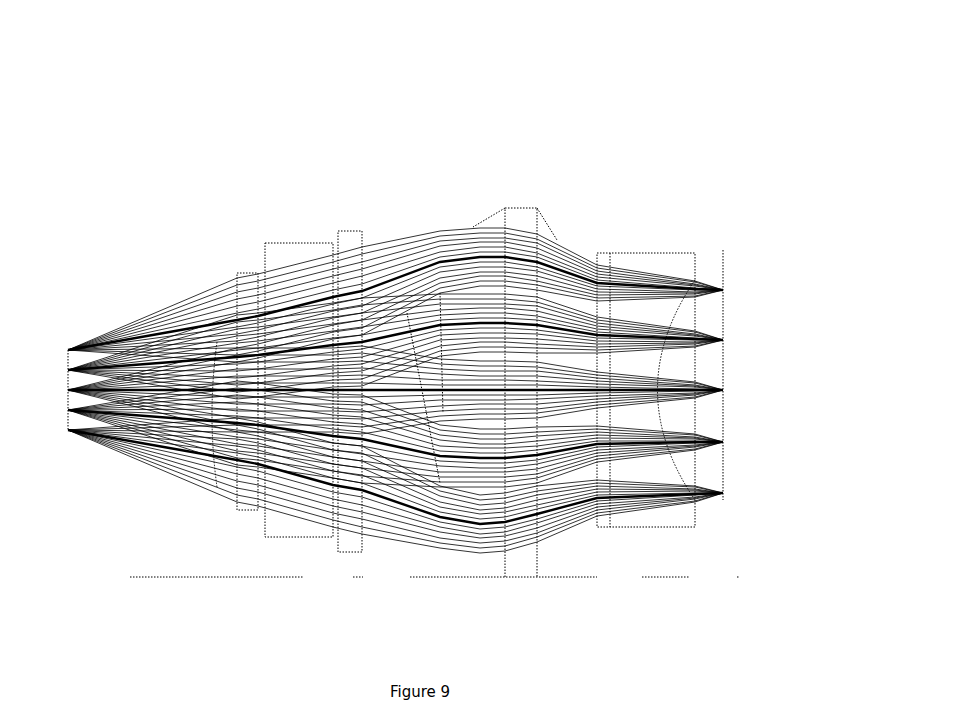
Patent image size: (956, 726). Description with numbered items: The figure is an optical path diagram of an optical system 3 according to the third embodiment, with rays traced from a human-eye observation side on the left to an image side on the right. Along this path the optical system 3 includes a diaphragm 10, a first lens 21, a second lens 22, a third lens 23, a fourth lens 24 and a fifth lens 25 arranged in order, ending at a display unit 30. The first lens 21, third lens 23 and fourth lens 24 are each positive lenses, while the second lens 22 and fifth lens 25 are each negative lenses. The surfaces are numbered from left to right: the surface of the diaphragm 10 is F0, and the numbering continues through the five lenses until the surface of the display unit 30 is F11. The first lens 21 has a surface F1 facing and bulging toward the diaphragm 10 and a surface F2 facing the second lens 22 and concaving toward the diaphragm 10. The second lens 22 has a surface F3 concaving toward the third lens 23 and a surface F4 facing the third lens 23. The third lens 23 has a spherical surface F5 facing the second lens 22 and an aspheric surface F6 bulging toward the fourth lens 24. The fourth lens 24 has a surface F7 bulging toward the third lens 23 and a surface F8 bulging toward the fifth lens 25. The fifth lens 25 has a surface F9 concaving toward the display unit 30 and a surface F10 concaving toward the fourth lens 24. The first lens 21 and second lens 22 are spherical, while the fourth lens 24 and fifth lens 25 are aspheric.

The optical system 3 is at (317, 100).
The diaphragm 10 is at (68, 357).
The first lens 21 is at (243, 277).
The second lens 22 is at (310, 245).
The third lens 23 is at (352, 235).
The fourth lens 24 is at (517, 210).
The fifth lens 25 is at (635, 258).
The display unit 30 is at (723, 277).
The surface of the diaphragm F0 is at (70, 434).
The surface of the first lens facing the diaphragm F1 is at (231, 499).
The surface of the first lens facing the second lens F2 is at (258, 510).
The surface of the second lens facing the first lens F3 is at (263, 542).
The surface of the second lens facing the third lens F4 is at (325, 542).
The surface of the third lens facing the second lens F5 is at (339, 554).
The surface of the third lens facing the fourth lens F6 is at (365, 545).
The surface of the fourth lens facing the third lens F7 is at (489, 556).
The surface of the fourth lens facing the fifth lens F8 is at (541, 558).
The surface of the fifth lens facing the fourth lens F9 is at (601, 529).
The surface of the fifth lens facing the display unit F10 is at (696, 529).
The surface of the display unit F11 is at (723, 502).